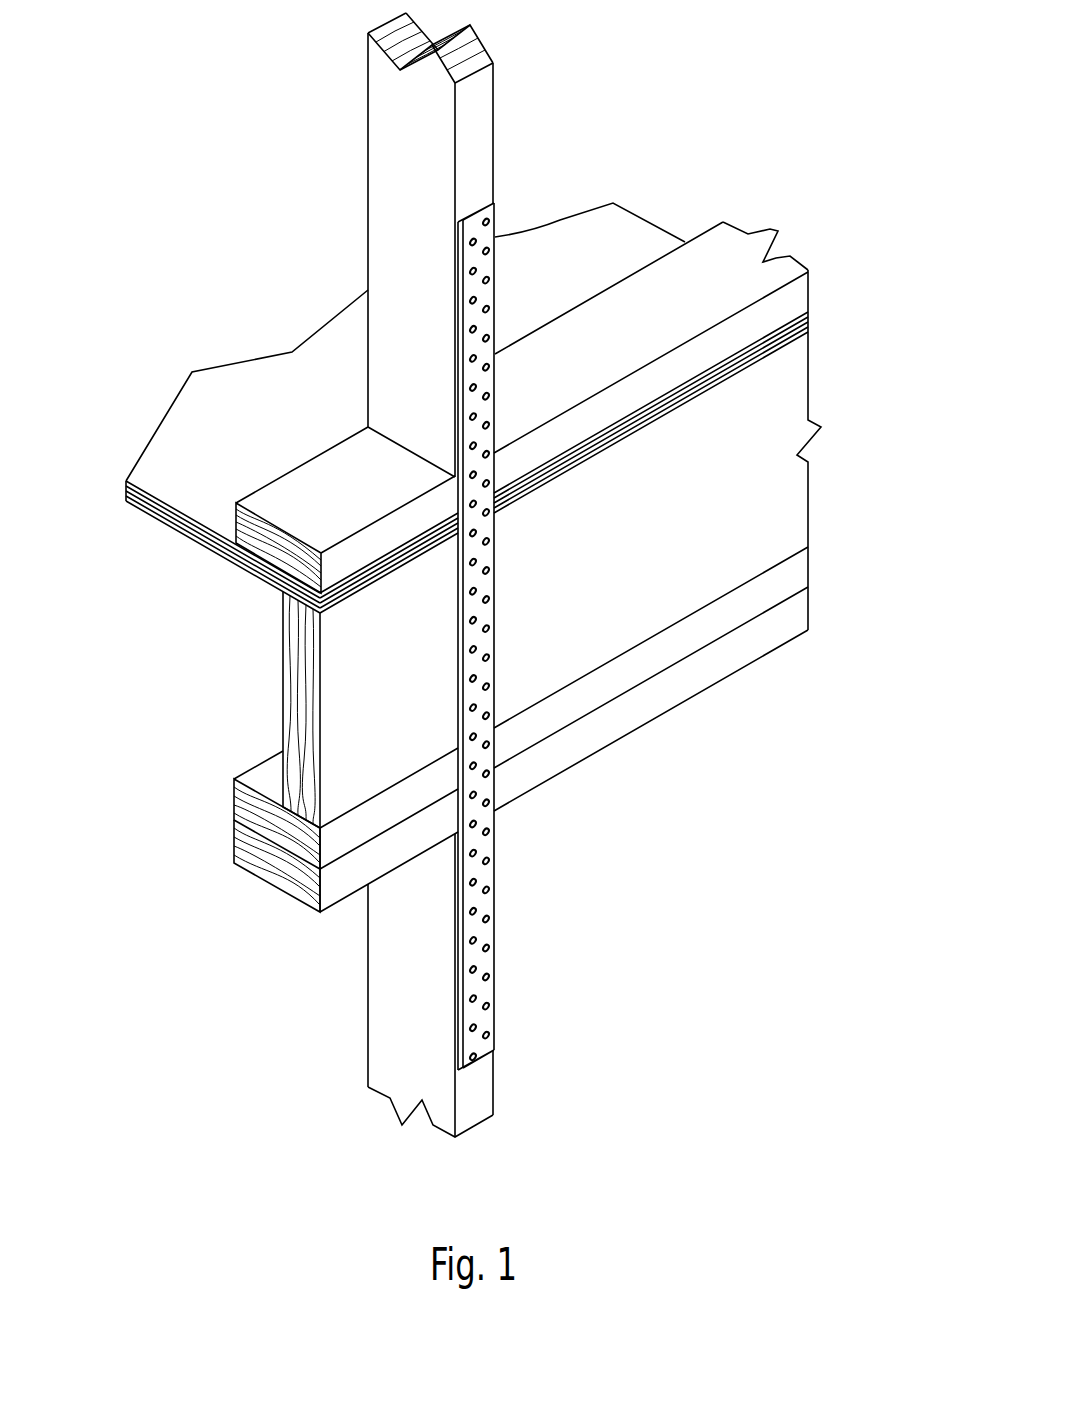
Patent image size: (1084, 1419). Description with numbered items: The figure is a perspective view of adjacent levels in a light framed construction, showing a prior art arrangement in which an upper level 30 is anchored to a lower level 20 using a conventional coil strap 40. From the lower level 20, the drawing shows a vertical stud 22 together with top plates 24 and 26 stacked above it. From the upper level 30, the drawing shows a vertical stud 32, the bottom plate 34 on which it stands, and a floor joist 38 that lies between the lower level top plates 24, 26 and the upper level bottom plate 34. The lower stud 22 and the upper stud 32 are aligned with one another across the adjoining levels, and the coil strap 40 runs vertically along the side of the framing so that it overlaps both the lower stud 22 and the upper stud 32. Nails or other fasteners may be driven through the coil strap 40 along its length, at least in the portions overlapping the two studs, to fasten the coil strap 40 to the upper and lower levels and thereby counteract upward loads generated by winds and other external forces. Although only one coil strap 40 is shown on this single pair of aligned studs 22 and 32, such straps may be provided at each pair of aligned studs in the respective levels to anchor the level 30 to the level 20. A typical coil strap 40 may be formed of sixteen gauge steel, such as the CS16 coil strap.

The lower level 20 is at (647, 866).
The stud 22 is at (387, 1017).
The top plate 24 is at (243, 845).
The top plate 26 is at (243, 805).
The upper level 30 is at (647, 126).
The stud 32 is at (385, 163).
The bottom plate 34 is at (754, 242).
The floor joist 38 is at (792, 377).
The coil strap 40 is at (484, 933).